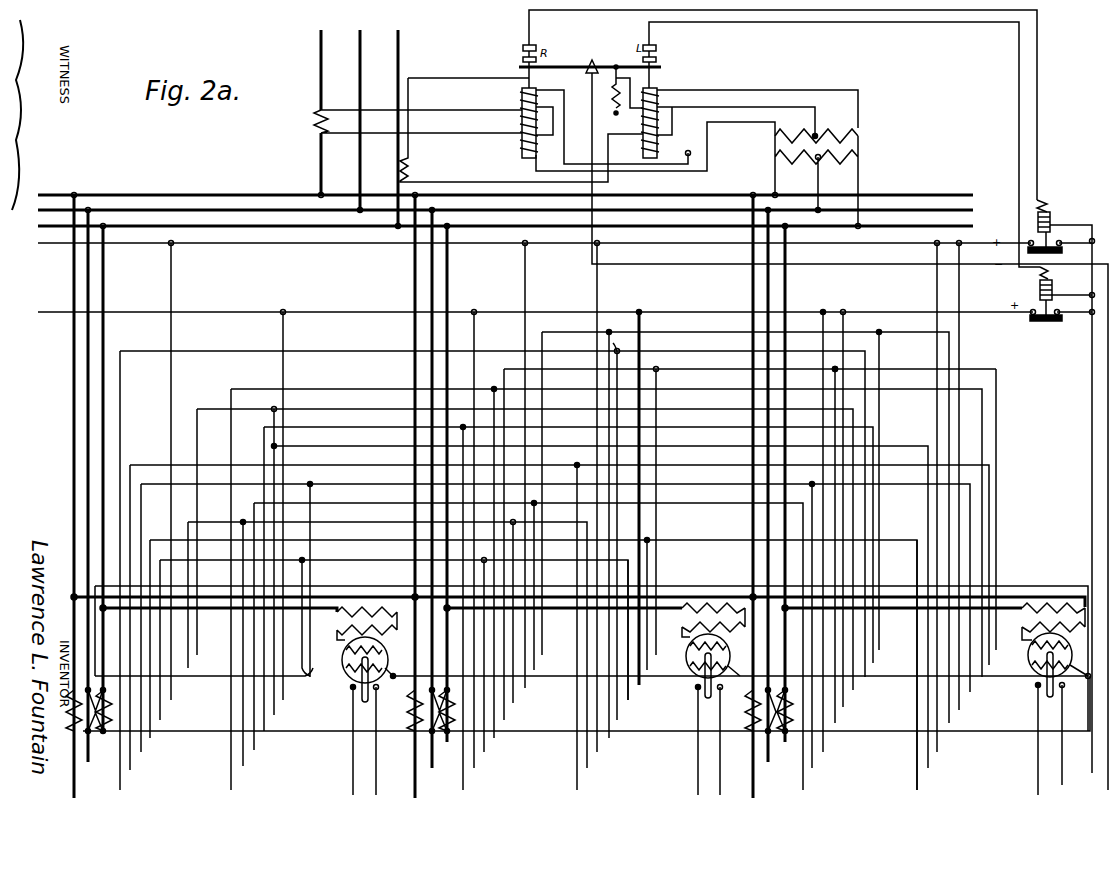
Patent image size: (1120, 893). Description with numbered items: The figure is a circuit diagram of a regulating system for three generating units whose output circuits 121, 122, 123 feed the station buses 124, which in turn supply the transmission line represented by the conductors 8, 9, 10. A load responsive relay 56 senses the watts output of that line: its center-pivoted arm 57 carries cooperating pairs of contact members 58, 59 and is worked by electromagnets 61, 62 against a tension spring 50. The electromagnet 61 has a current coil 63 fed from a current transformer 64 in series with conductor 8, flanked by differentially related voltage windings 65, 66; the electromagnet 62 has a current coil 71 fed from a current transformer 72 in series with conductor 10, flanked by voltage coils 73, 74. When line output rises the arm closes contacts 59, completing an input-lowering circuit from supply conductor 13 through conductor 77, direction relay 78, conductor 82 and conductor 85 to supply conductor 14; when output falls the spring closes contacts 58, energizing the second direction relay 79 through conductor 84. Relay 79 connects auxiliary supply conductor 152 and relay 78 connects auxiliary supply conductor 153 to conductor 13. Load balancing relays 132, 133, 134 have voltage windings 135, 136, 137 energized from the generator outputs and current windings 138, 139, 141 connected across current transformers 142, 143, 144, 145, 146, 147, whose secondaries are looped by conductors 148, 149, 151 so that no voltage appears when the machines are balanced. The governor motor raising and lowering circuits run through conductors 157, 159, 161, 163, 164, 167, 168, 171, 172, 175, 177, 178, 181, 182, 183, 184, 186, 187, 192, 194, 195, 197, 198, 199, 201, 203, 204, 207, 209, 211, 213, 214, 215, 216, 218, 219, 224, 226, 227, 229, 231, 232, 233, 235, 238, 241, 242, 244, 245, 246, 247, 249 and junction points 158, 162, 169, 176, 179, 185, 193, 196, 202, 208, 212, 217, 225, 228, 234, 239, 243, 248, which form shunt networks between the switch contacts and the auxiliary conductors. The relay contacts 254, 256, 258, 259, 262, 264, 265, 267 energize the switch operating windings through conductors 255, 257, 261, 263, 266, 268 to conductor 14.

The transmission line conductor 8 is at (321, 60).
The transmission line conductor 9 is at (360, 60).
The supply conductor 10 is at (398, 60).
The supply conductor 13 is at (1092, 775).
The supply conductor 14 is at (1108, 791).
The tension spring 50 is at (612, 95).
The load responsive relay 56 is at (588, 52).
The arm 57 is at (607, 63).
The contact members 58 is at (521, 55).
The contact members 59 is at (660, 52).
The electromagnet 61 is at (510, 128).
The electromagnet 62 is at (656, 123).
The current coil 63 is at (520, 119).
The current transformer 64 is at (312, 123).
The voltage winding 65 is at (519, 96).
The voltage winding 66 is at (520, 146).
The current coil 71 is at (659, 121).
The current transformer 72 is at (392, 170).
The voltage coil 73 is at (659, 96).
The voltage coil 74 is at (659, 148).
The conductor 77 is at (1091, 410).
The direction relay 78 is at (1062, 294).
The direction relay 79 is at (1060, 226).
The conductor 82 is at (1016, 112).
The conductor 84 is at (1040, 112).
The conductor 85 is at (598, 189).
The output circuit 121 is at (76, 286).
The output circuit 122 is at (417, 286).
The output circuit 123 is at (755, 292).
The station buses 124 is at (718, 198).
The load balancing relay 132 is at (378, 658).
The load balancing relay 133 is at (723, 657).
The load balancing relay 134 is at (1080, 657).
The voltage winding 135 is at (346, 651).
The voltage winding 136 is at (656, 655).
The voltage winding 137 is at (1030, 647).
The current winding 138 is at (382, 667).
The current winding 139 is at (742, 667).
The current winding 141 is at (1032, 662).
The current transformer 142 is at (70, 736).
The current transformer 143 is at (88, 754).
The current transformer 144 is at (410, 732).
The current transformer 145 is at (432, 736).
The current transformer 146 is at (752, 732).
The current transformer 147 is at (774, 736).
The conductor 148 is at (358, 703).
The conductor 149 is at (703, 701).
The conductor 151 is at (1044, 701).
The auxiliary supply conductor 152 is at (186, 248).
The auxiliary supply conductor 153 is at (883, 313).
The conductor 157 is at (120, 790).
The junction point 158 is at (625, 344).
The conductor 159 is at (622, 358).
The conductor 161 is at (609, 738).
The junction point 162 is at (605, 327).
The conductor 163 is at (672, 334).
The conductor 164 is at (959, 710).
The conductor 167 is at (673, 352).
The conductor 168 is at (880, 351).
The junction point 169 is at (879, 333).
The conductor 171 is at (547, 333).
The conductor 172 is at (525, 688).
The conductor 175 is at (231, 790).
The junction point 176 is at (494, 389).
The conductor 177 is at (494, 738).
The conductor 178 is at (504, 720).
The junction point 179 is at (664, 369).
The conductor 181 is at (708, 368).
The conductor 182 is at (843, 707).
The conductor 183 is at (984, 393).
The conductor 184 is at (1006, 509).
The junction point 185 is at (835, 369).
The conductor 186 is at (686, 648).
The conductor 187 is at (639, 685).
The conductor 192 is at (463, 790).
The junction point 193 is at (463, 427).
The conductor 194 is at (264, 731).
The conductor 195 is at (274, 715).
The junction point 196 is at (272, 447).
The conductor 197 is at (326, 448).
The conductor 198 is at (937, 752).
The conductor 199 is at (548, 425).
The conductor 201 is at (548, 407).
The junction point 202 is at (274, 409).
The conductor 203 is at (197, 655).
The conductor 204 is at (171, 700).
The conductor 207 is at (577, 790).
The junction point 208 is at (580, 461).
The conductor 209 is at (324, 467).
The conductor 211 is at (141, 752).
The junction point 212 is at (815, 478).
The conductor 213 is at (812, 768).
The conductor 214 is at (823, 752).
The conductor 215 is at (686, 465).
The conductor 216 is at (970, 692).
The junction point 217 is at (310, 484).
The conductor 218 is at (318, 618).
The conductor 219 is at (283, 700).
The conductor 224 is at (686, 501).
The junction point 225 is at (534, 503).
The conductor 226 is at (348, 502).
The conductor 227 is at (243, 766).
The junction point 228 is at (243, 522).
The conductor 229 is at (344, 522).
The conductor 231 is at (597, 752).
The conductor 232 is at (534, 670).
The conductor 233 is at (513, 703).
The junction point 234 is at (513, 522).
The conductor 235 is at (188, 668).
The conductor 238 is at (917, 790).
The junction point 239 is at (647, 540).
The conductor 241 is at (344, 541).
The conductor 242 is at (160, 720).
The junction point 243 is at (484, 560).
The conductor 244 is at (484, 752).
The conductor 245 is at (474, 768).
The conductor 246 is at (647, 670).
The conductor 247 is at (628, 700).
The junction point 248 is at (302, 560).
The conductor 249 is at (214, 678).
The contact member 254 is at (353, 687).
The conductor 255 is at (353, 788).
The contact member 256 is at (376, 690).
The conductor 257 is at (376, 784).
The movable contact member 258 is at (689, 688).
The contact member 259 is at (694, 690).
The conductor 261 is at (698, 793).
The contact member 262 is at (720, 690).
The conductor 263 is at (720, 784).
The moving contact member 264 is at (1029, 681).
The contact member 265 is at (1038, 688).
The conductor 266 is at (1038, 794).
The contact member 267 is at (1062, 688).
The conductor 268 is at (1062, 775).